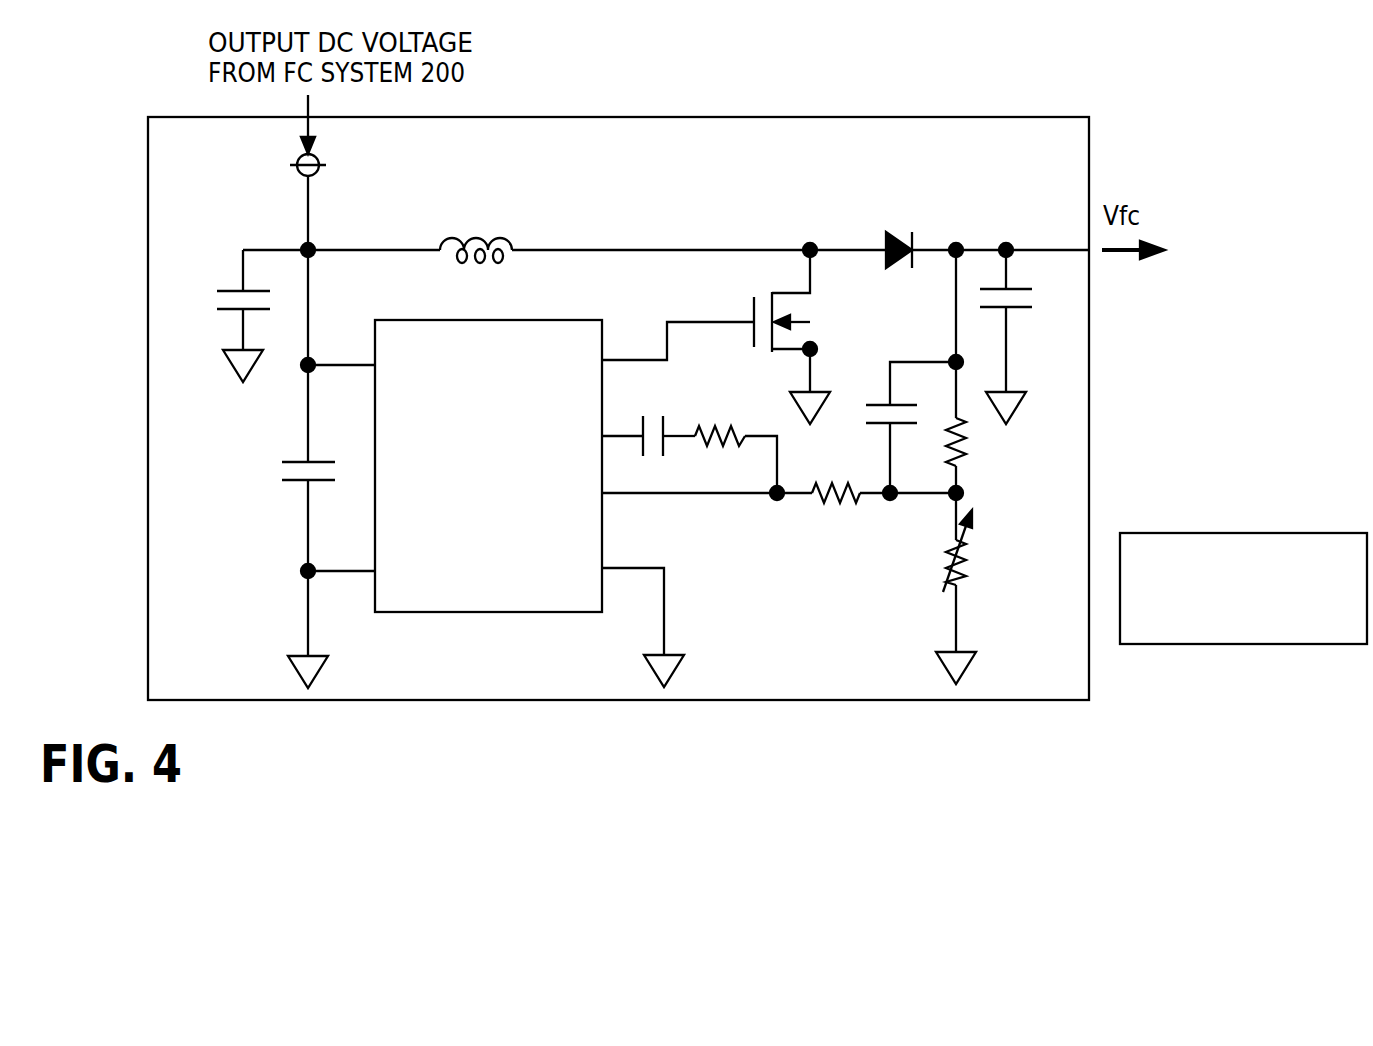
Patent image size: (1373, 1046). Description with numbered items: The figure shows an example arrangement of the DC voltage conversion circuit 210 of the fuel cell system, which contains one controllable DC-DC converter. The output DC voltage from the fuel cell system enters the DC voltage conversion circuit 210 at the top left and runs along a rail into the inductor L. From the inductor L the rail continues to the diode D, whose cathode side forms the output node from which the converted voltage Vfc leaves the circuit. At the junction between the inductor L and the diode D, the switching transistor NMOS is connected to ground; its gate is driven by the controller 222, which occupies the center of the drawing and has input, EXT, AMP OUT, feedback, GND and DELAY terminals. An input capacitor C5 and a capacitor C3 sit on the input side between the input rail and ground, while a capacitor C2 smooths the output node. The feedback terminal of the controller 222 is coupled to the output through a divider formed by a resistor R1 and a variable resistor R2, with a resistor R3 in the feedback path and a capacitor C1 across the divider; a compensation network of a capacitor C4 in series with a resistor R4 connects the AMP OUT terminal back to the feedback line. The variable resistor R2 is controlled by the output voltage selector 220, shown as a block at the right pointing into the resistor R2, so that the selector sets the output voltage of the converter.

The DC voltage conversion circuit 210 is at (435, 164).
The controller 222 is at (445, 464).
The output voltage selector 220 is at (1000, 557).
The inductor L is at (476, 234).
The diode D is at (899, 230).
The switching transistor NMOS is at (827, 337).
The capacitor C1 is at (899, 427).
The capacitor C2 is at (1025, 337).
The capacitor C3 is at (289, 473).
The capacitor C4 is at (651, 451).
The capacitor C5 is at (224, 316).
The resistor R1 is at (977, 446).
The variable resistor R2 is at (976, 557).
The resistor R3 is at (836, 512).
The resistor R4 is at (720, 454).